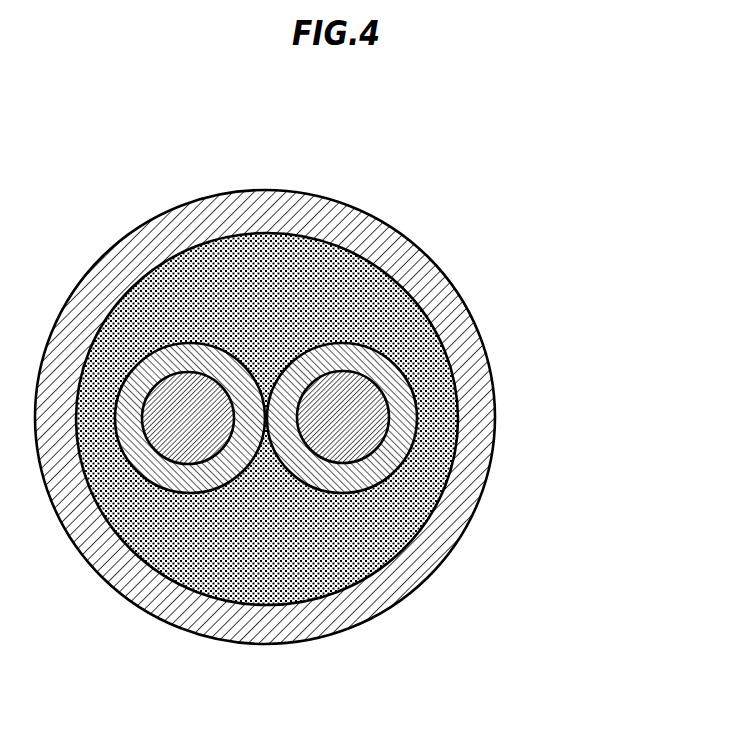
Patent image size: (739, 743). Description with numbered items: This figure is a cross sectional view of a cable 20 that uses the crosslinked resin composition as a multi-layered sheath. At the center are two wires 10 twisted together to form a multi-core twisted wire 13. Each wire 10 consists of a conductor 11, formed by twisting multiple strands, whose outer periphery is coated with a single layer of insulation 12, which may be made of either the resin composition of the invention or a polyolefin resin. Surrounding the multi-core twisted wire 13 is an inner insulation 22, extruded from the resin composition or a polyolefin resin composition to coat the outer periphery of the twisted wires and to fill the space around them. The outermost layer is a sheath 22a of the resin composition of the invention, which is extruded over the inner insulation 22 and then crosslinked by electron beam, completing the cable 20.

The wire 10 is at (363, 406).
The conductor 11 is at (372, 386).
The insulation 12 is at (413, 403).
The multi-core twisted wire 13 is at (275, 487).
The cable 20 is at (336, 413).
The inner insulation 22 is at (400, 522).
The sheath 22a is at (415, 565).